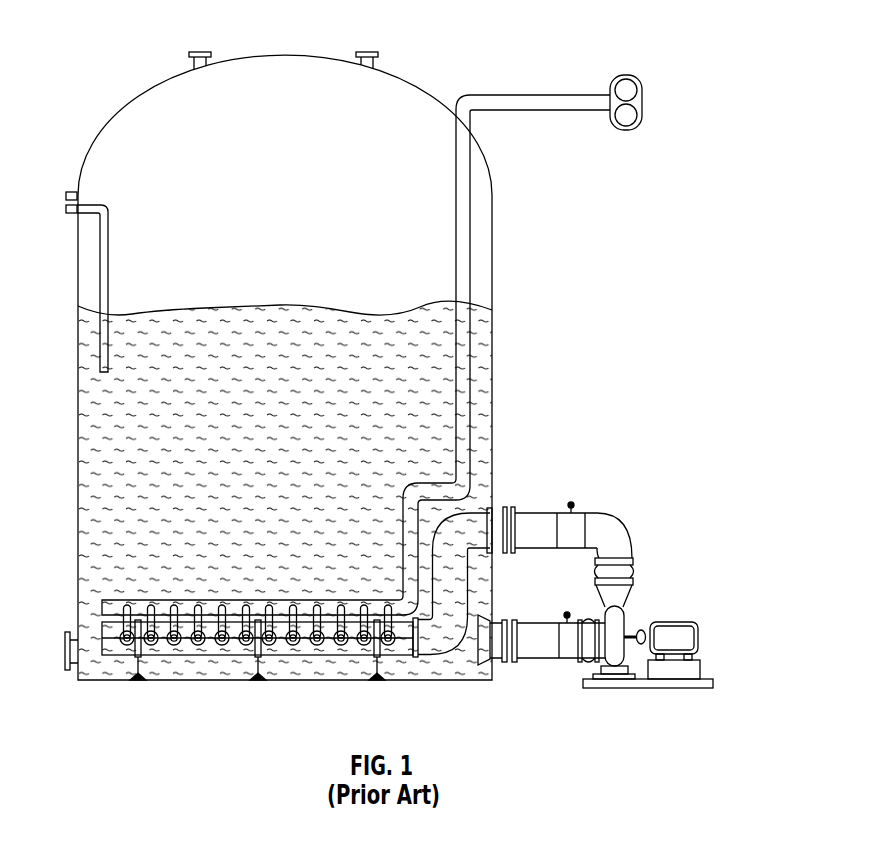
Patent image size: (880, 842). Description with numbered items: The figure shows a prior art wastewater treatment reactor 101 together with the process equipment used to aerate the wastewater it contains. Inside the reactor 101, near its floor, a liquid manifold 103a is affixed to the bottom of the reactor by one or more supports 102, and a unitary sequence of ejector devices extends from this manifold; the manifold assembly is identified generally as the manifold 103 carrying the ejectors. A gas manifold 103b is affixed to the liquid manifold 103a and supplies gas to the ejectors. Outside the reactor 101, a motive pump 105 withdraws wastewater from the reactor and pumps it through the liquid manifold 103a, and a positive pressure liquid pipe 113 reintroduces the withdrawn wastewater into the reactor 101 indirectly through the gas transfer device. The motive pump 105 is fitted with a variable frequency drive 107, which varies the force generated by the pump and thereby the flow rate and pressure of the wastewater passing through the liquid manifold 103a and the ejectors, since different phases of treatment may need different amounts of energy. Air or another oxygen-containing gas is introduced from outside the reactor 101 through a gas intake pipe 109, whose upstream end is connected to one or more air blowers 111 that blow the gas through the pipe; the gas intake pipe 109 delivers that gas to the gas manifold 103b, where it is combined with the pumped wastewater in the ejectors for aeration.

The wastewater treatment reactor 101 is at (125, 113).
The supports 102 is at (130, 662).
The manifold header 103 is at (300, 657).
The liquid manifold 103a is at (470, 645).
The gas manifold 103b is at (230, 600).
The motive pump 105 is at (628, 622).
The variable frequency drive 107 is at (700, 641).
The gas intake pipe 109 is at (456, 342).
The air blower 111 is at (645, 103).
The positive pressure liquid pipe 113 is at (623, 526).